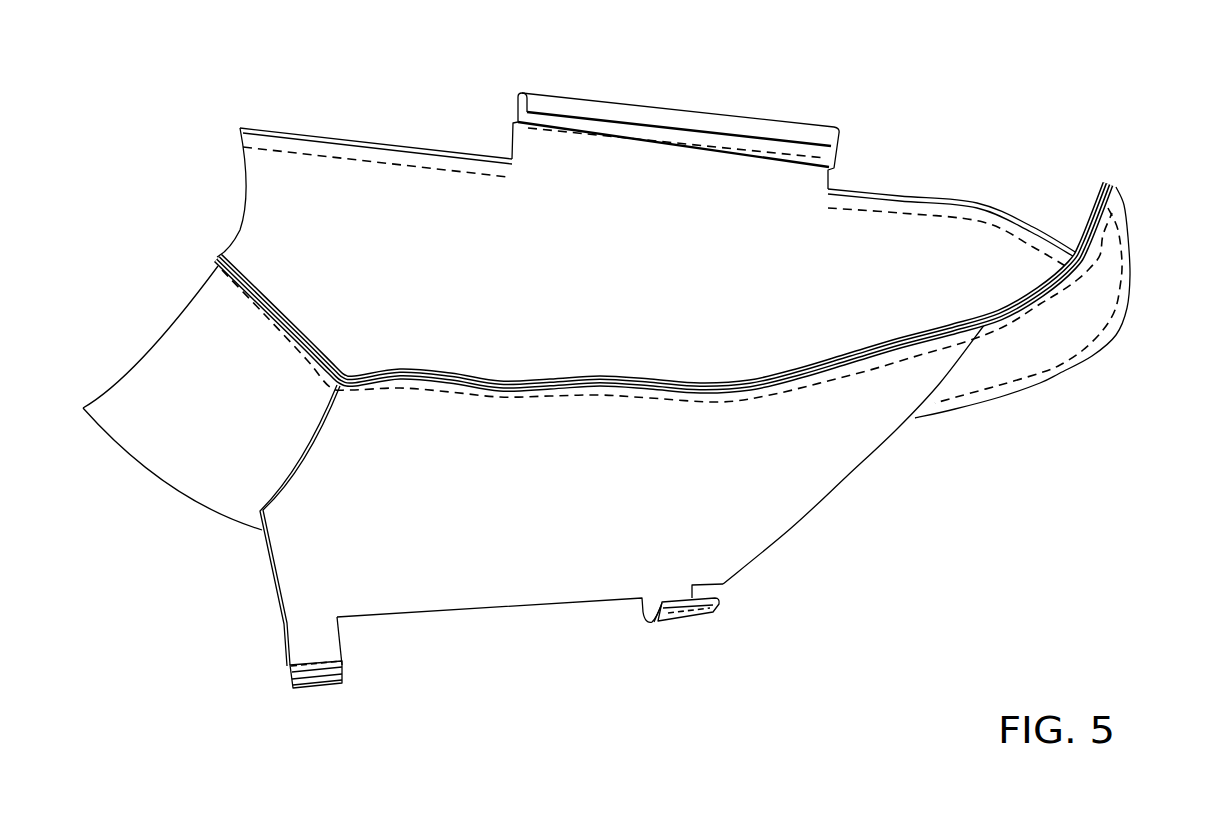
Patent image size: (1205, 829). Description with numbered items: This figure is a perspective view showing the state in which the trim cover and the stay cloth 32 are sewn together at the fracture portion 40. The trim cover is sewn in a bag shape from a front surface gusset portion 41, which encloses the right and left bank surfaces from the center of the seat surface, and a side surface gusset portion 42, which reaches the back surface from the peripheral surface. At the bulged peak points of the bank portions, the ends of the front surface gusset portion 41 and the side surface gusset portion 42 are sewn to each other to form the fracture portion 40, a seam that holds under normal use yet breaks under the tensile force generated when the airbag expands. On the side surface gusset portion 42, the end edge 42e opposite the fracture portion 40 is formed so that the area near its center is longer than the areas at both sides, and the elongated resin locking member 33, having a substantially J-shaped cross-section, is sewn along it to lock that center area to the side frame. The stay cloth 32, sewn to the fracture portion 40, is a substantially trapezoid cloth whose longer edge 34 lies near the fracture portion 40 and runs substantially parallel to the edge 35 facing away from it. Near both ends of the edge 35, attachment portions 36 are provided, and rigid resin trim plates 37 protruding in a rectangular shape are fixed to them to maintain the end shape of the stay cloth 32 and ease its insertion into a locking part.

The stay cloth 32 is at (788, 530).
The locking member 33 is at (735, 127).
The edge near the fracture portion 34 is at (852, 363).
The edge facing the fracture portion 35 is at (533, 607).
The attachment portion 36 is at (330, 642).
The trim plate 37 is at (718, 607).
The fracture portion 40 is at (392, 375).
The front surface gusset portion 41 is at (1063, 335).
The side surface gusset portion 42 is at (903, 250).
The end edge 42e is at (1007, 212).